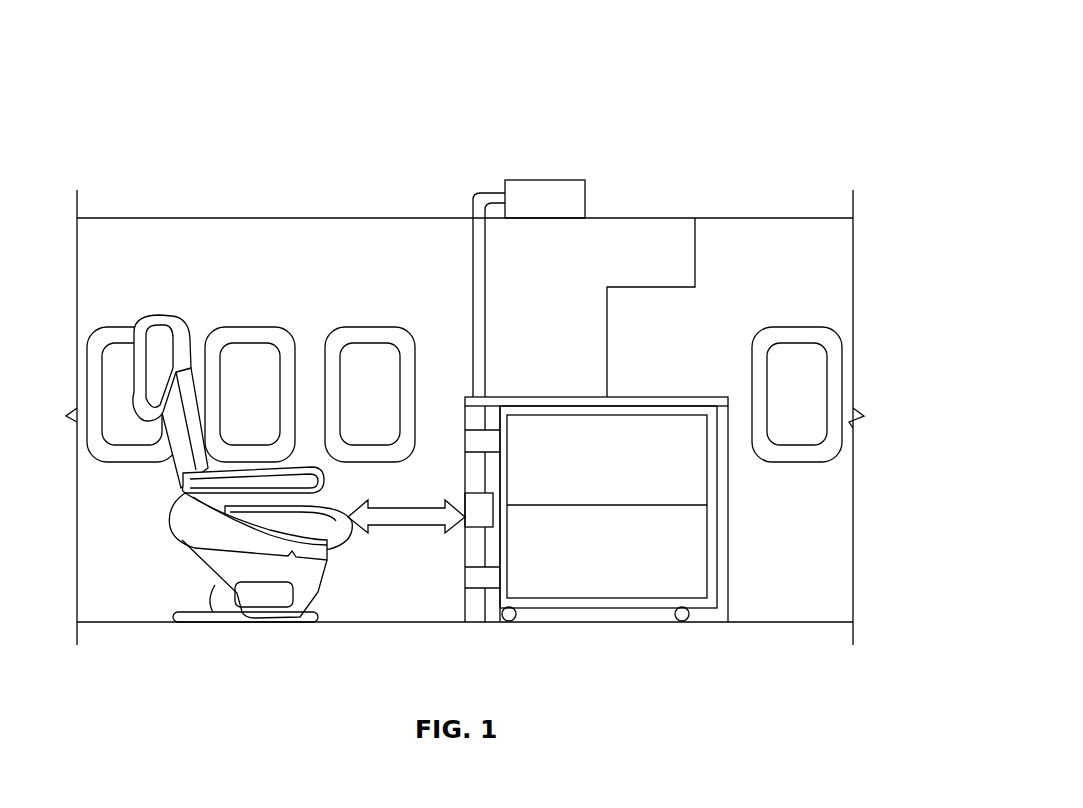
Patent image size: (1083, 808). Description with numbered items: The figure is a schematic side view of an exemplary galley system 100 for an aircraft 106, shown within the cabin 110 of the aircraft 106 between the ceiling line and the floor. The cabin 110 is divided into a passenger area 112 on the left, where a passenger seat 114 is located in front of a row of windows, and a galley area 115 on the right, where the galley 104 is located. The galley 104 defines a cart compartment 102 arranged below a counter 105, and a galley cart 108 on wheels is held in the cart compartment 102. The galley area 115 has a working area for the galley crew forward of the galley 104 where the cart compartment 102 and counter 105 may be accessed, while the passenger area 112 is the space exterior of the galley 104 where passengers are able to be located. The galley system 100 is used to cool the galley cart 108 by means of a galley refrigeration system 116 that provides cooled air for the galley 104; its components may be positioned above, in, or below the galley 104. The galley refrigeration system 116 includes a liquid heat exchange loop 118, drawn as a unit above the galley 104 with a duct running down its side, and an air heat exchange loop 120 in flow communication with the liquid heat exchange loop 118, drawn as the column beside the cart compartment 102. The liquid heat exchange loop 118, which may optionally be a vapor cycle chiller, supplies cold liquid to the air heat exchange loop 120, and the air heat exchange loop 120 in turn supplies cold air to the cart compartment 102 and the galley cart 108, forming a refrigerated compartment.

The galley system 100 is at (622, 60).
The cart compartment 102 is at (610, 410).
The galley 104 is at (645, 216).
The counter 105 is at (680, 397).
The aircraft 106 is at (787, 216).
The galley cart 108 is at (623, 601).
The cabin 110 is at (210, 245).
The passenger area 112 is at (324, 304).
The passenger seat 114 is at (180, 340).
The galley area 115 is at (722, 262).
The galley refrigeration system 116 is at (440, 262).
The liquid heat exchange loop 118 is at (524, 172).
The air heat exchange loop 120 is at (460, 569).